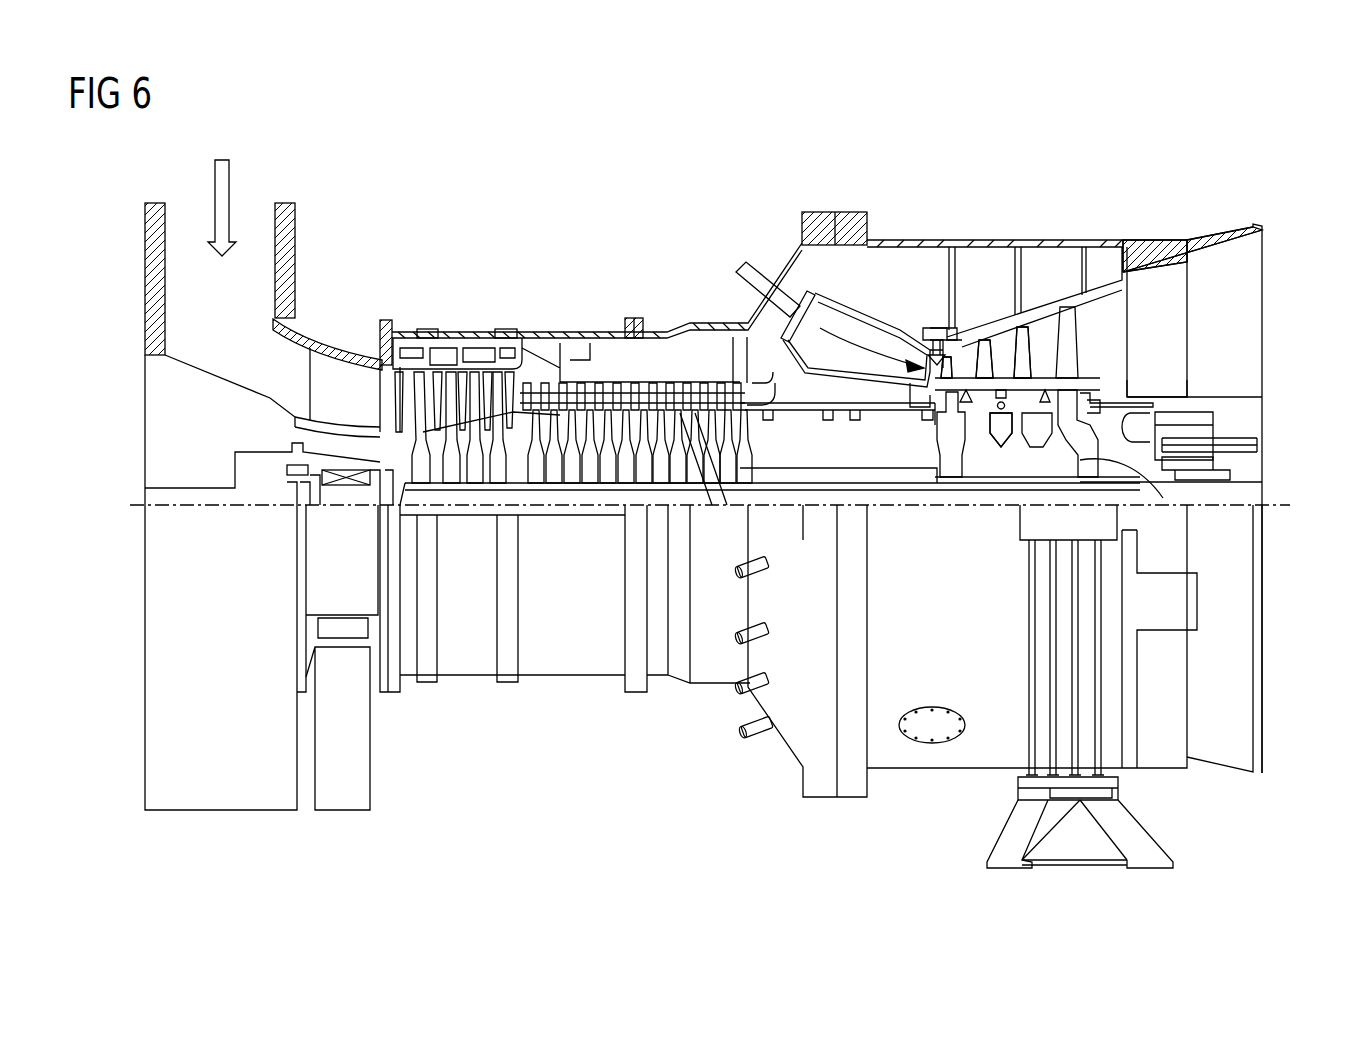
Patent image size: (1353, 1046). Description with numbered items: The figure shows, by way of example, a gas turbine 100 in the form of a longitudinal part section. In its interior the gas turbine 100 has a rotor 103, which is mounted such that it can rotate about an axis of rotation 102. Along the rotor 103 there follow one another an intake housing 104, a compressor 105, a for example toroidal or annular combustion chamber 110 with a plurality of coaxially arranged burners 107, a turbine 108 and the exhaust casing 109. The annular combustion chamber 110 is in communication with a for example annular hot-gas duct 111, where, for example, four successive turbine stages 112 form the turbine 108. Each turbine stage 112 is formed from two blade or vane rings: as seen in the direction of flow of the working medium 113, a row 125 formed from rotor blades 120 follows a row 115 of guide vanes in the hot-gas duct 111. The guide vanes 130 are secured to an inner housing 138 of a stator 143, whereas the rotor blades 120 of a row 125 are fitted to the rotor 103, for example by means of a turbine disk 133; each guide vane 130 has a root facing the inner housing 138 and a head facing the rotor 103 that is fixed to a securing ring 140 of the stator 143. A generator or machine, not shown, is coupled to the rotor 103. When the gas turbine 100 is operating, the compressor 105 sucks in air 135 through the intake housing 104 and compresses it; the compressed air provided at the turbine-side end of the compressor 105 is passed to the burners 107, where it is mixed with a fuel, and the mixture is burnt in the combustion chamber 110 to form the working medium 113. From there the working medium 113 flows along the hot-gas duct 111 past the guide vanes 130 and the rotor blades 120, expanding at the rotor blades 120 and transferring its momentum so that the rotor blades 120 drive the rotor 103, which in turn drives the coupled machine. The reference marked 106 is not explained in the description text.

The gas turbine 100 is at (553, 216).
The axis of rotation 102 is at (133, 505).
The rotor 103 is at (766, 470).
The intake housing 104 is at (290, 268).
The compressor 105 is at (481, 319).
The combustion chamber 106 is at (927, 343).
The burner 107 is at (742, 270).
The turbine 108 is at (955, 214).
The exhaust casing 109 is at (1165, 245).
The combustion chamber 110 is at (835, 315).
The hot-gas duct 111 is at (1093, 328).
The turbine stage 112 is at (1077, 213).
The working medium 113 is at (855, 340).
The row of guide vanes 115 is at (1040, 278).
The rotor blade 120 is at (1003, 377).
The row of rotor blades 125 is at (1097, 264).
The guide vane 130 is at (985, 357).
The turbine disk 133 is at (1163, 498).
The air 135 is at (230, 165).
The inner housing 138 is at (983, 291).
The securing ring 140 is at (955, 385).
The stator 143 is at (915, 240).